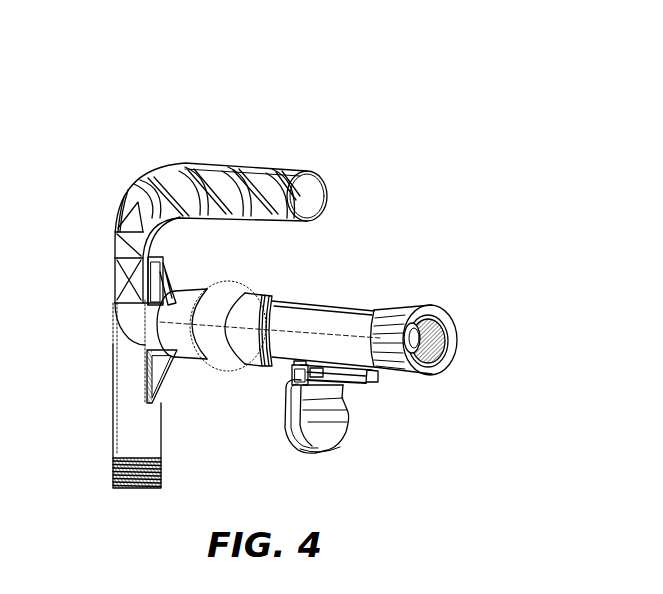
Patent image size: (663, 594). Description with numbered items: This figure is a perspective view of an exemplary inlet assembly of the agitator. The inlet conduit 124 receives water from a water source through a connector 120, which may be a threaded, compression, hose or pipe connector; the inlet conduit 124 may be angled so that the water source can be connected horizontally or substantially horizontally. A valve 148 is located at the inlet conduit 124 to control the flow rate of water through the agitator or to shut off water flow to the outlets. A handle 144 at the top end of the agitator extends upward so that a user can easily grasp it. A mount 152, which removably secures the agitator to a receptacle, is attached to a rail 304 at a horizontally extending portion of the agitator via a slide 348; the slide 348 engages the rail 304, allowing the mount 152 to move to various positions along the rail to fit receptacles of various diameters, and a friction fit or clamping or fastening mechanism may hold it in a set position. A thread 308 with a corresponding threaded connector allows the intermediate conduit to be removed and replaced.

The connector 120 is at (414, 304).
The inlet conduit 124 is at (112, 407).
The handle 144 is at (210, 163).
The valve 148 is at (250, 284).
The mount 152 is at (297, 452).
The rail 304 is at (367, 380).
The thread 308 is at (163, 472).
The slide 348 is at (292, 374).